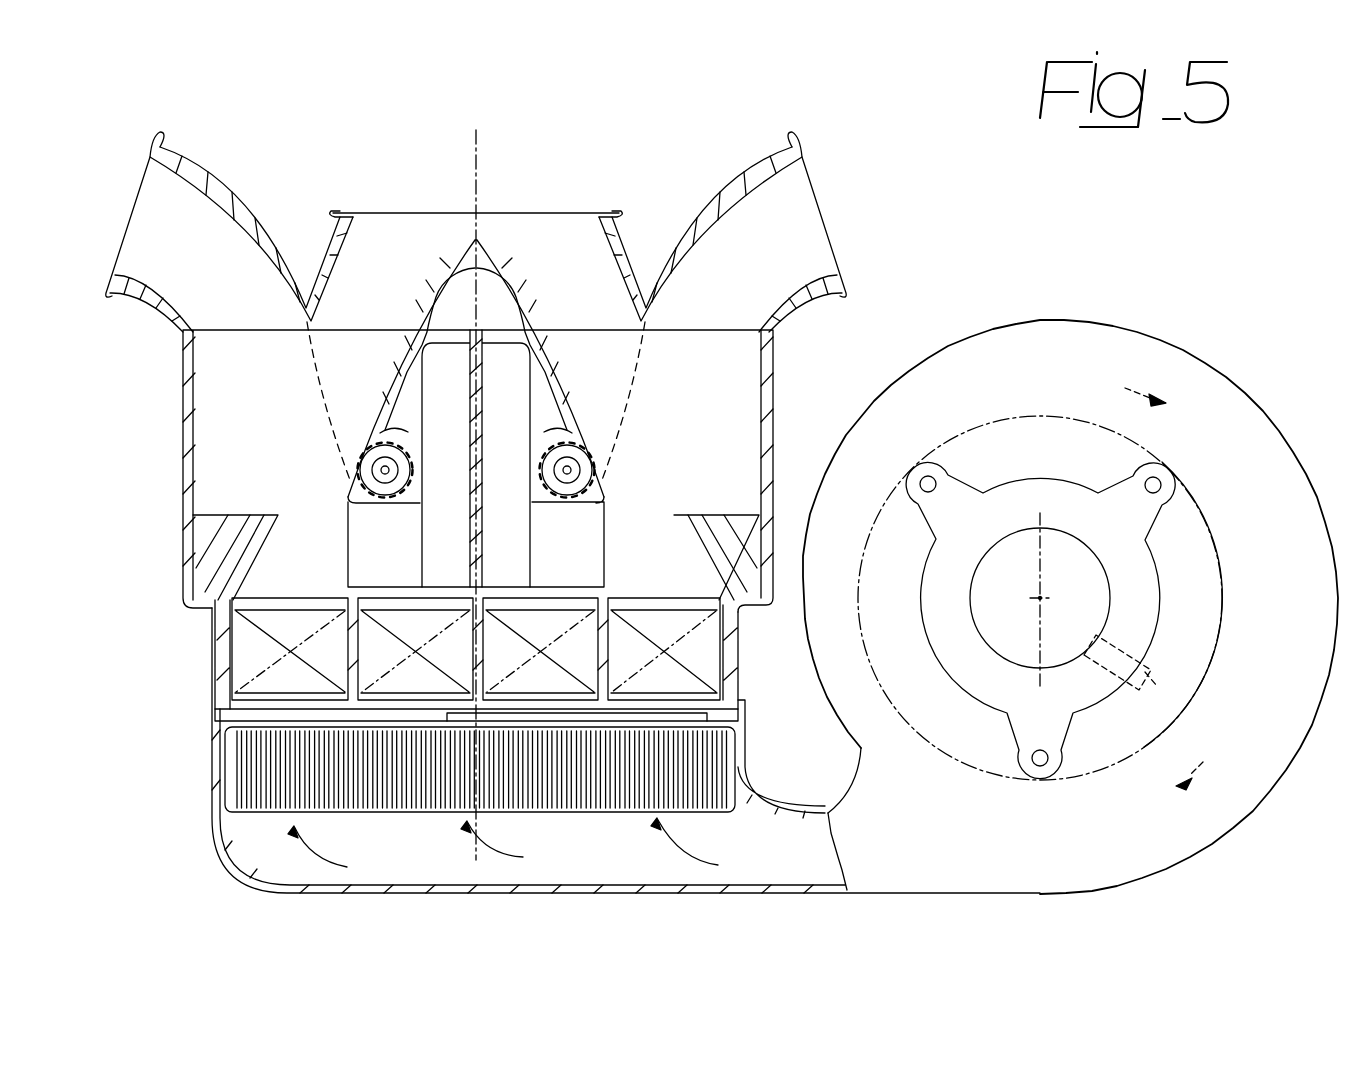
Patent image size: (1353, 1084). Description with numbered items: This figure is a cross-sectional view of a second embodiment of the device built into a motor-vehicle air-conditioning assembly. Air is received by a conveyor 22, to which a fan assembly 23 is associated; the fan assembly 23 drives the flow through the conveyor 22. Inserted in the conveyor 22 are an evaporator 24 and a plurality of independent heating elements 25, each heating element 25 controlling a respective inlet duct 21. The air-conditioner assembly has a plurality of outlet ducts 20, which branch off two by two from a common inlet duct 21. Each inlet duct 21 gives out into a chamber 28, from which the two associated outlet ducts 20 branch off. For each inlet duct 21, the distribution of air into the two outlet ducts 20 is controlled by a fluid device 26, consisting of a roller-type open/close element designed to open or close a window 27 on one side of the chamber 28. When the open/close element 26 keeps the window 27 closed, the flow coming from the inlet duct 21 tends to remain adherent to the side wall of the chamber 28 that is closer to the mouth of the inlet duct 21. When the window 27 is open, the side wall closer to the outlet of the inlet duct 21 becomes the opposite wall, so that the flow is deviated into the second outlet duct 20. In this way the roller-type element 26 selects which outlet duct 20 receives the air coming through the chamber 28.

The outlet duct 20 is at (377, 240).
The inlet duct 21 is at (303, 567).
The conveyor 22 is at (437, 853).
The fan assembly 23 is at (1195, 405).
The evaporator 24 is at (633, 753).
The independent heating element 25 is at (257, 668).
The fluid device 26 is at (383, 470).
The window 27 is at (355, 478).
The chamber 28 is at (227, 445).